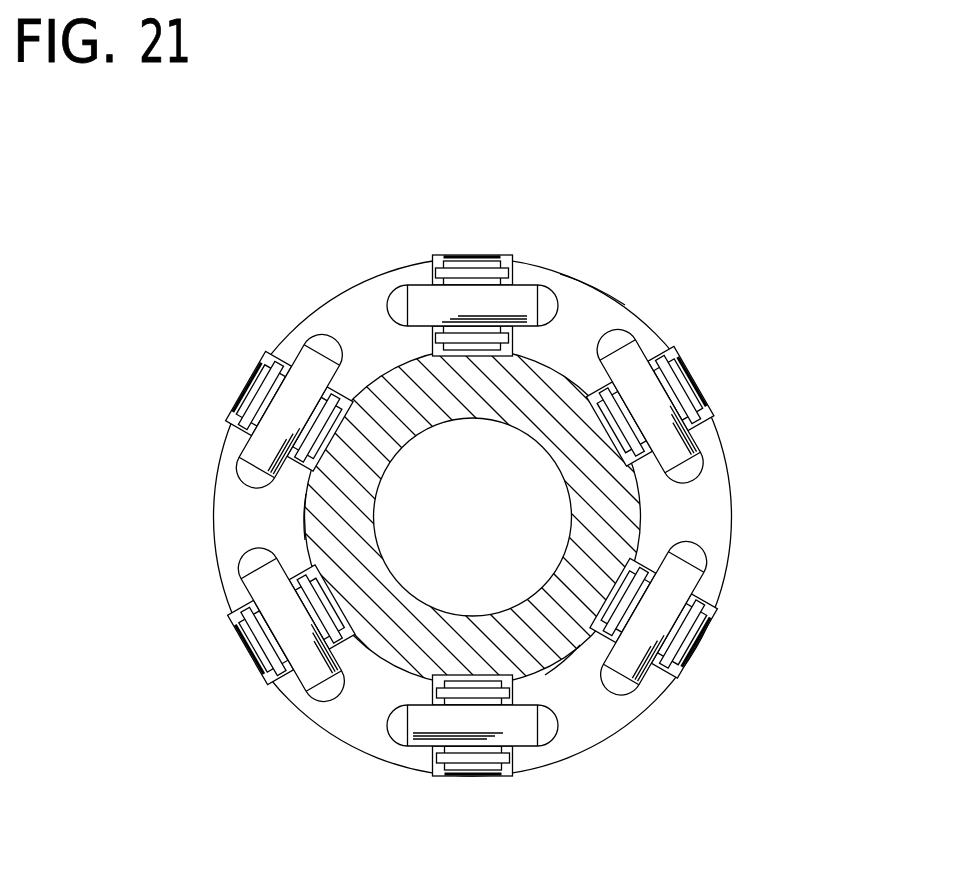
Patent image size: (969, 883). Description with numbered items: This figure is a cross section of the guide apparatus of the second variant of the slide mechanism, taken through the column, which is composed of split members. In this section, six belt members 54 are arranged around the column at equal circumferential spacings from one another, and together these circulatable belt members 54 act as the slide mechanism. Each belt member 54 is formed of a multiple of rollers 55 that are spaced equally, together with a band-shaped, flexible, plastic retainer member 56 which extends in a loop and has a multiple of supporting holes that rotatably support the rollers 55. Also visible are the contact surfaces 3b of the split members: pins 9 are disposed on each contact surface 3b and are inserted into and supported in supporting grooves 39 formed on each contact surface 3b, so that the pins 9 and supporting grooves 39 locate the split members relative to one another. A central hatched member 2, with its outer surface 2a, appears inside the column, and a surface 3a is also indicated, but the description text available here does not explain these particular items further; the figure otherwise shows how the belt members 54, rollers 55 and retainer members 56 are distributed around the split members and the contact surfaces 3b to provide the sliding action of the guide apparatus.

The shaft / hub 2 is at (497, 412).
The hub outer surface 2a is at (562, 658).
The inner ring surface 3a is at (312, 517).
The contact surface 3b is at (715, 515).
The pin 9 is at (415, 293).
The supporting groove 39 is at (538, 284).
The belt member 54 is at (250, 358).
The roller 55 is at (466, 258).
The retainer member 56 is at (242, 433).